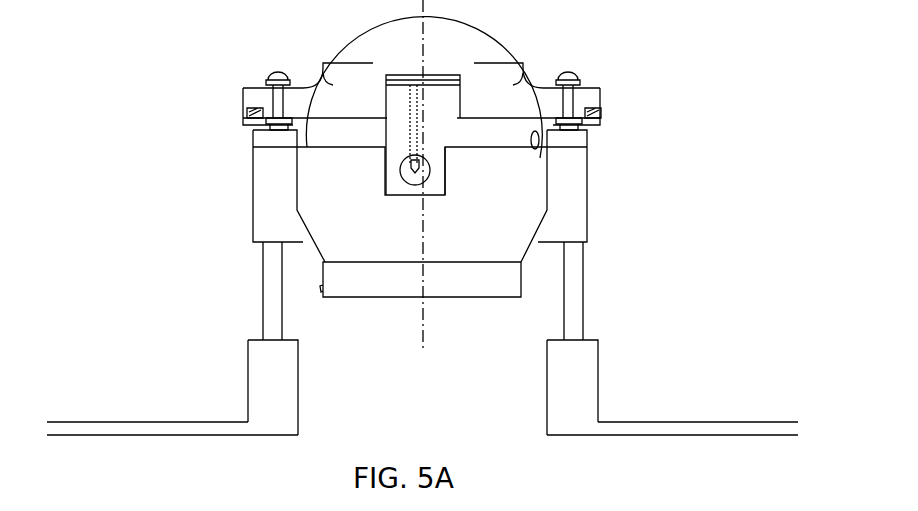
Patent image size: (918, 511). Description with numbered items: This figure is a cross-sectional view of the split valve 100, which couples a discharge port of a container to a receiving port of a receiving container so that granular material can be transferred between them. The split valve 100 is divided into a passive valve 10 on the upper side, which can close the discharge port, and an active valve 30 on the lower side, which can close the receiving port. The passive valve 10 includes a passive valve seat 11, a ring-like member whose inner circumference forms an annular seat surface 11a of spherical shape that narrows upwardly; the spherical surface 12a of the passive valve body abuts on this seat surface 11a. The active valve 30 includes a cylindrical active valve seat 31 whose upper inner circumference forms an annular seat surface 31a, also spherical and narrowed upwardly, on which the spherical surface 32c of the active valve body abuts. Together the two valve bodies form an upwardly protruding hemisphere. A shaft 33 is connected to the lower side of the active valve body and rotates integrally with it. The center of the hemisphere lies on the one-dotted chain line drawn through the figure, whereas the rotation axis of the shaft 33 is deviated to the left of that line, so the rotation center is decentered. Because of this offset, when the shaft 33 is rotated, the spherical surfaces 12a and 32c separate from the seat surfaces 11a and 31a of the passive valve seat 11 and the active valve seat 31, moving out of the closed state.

The split valve 100 is at (705, 58).
The passive valve 10 is at (607, 72).
The passive valve seat 11 is at (538, 92).
The annular seat surface 11a is at (515, 95).
The spherical surface 12a is at (522, 75).
The active valve 30 is at (640, 128).
The active valve seat 31 is at (573, 222).
The annular seat surface 31a is at (532, 148).
The spherical surface 32c is at (530, 137).
The shaft 33 is at (400, 172).